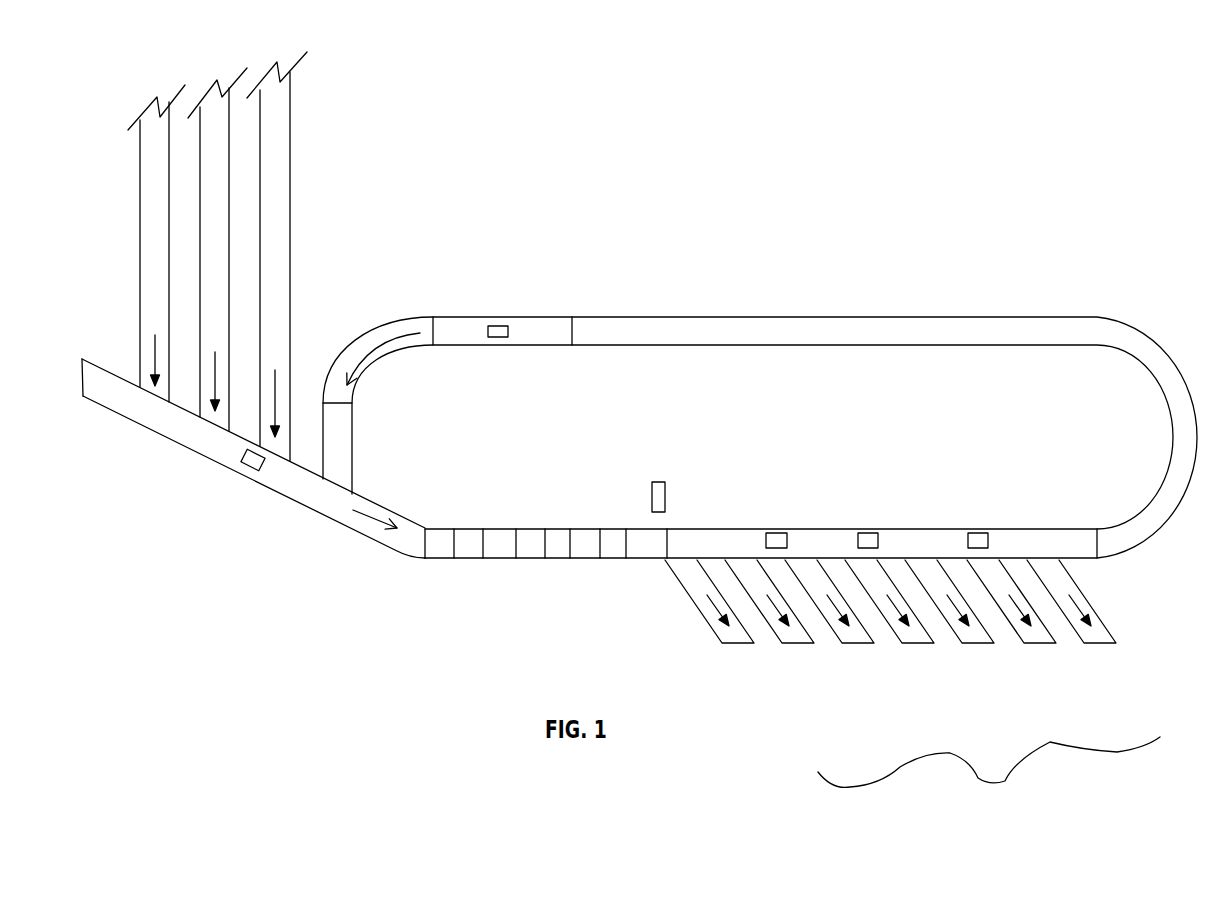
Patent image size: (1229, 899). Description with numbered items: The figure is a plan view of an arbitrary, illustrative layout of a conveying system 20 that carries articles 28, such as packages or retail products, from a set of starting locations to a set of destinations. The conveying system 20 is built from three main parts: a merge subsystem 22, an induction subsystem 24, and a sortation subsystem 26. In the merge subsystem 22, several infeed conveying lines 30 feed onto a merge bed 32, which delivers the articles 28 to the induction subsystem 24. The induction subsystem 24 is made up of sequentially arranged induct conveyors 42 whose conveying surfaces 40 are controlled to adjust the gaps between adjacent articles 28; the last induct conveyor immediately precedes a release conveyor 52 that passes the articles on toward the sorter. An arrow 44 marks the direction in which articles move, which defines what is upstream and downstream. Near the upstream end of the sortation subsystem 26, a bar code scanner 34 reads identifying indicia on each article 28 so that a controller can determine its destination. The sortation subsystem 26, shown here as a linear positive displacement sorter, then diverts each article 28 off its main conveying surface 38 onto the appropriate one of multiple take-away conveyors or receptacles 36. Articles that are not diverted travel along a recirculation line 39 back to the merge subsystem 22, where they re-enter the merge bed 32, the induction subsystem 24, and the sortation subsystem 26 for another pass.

The conveying system 20 is at (913, 147).
The merge subsystem 22 is at (338, 238).
The induction subsystem 24 is at (625, 562).
The sortation subsystem 26 is at (1005, 781).
The articles 28 is at (496, 341).
The infeed conveying lines 30 is at (160, 140).
The merge bed 32 is at (220, 455).
The bar code scanner 34 is at (665, 500).
The take-away conveyors or receptacles 36 is at (1103, 645).
The main conveying surface 38 is at (1068, 554).
The recirculation line 39 is at (932, 333).
The conveying surfaces 40 is at (518, 543).
The induct conveyors 42 is at (466, 525).
The arrow 44 is at (278, 410).
The release conveyor 52 is at (646, 550).